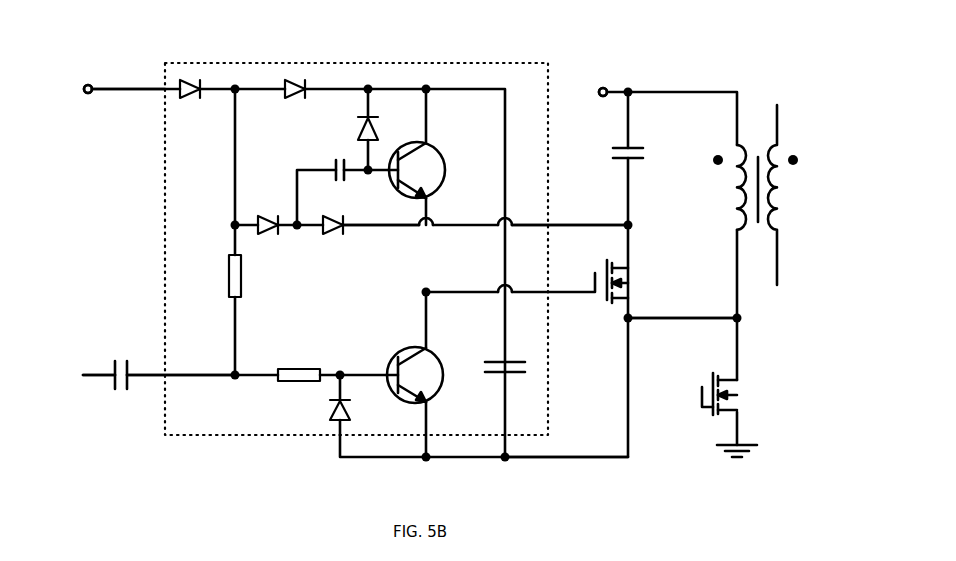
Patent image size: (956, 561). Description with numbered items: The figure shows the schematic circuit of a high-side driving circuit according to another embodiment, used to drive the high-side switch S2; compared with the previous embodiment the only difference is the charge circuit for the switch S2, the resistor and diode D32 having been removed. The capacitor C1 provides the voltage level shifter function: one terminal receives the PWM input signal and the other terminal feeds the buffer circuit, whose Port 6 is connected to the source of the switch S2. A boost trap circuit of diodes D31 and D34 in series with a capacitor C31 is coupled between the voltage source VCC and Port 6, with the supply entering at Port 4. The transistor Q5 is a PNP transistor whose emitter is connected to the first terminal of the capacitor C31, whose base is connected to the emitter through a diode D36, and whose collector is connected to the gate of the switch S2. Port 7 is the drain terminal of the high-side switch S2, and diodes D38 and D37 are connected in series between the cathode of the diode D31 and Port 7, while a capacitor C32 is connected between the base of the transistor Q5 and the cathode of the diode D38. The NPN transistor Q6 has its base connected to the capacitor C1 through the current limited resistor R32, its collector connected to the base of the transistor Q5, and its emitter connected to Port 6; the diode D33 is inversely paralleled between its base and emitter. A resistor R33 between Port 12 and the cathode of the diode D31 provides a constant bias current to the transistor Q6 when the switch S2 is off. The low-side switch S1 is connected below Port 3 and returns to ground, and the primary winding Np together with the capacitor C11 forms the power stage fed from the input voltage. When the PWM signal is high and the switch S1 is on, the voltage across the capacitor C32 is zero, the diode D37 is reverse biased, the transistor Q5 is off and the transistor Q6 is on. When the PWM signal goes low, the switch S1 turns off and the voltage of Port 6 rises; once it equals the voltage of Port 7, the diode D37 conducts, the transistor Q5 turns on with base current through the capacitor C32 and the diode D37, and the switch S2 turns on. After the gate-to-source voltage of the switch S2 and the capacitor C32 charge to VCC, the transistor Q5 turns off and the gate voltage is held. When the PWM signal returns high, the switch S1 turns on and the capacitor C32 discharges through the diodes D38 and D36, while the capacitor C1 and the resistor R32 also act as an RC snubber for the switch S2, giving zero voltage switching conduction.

The voltage source VCC is at (71, 80).
The port 4 Port 4 is at (121, 97).
The boost trap diode D31 is at (195, 107).
The boost trap diode D34 is at (291, 104).
The diode D36 is at (385, 127).
The capacitor C32 is at (326, 159).
The PNP transistor Q5 is at (432, 170).
The resistor R33 is at (214, 239).
The diode D38 is at (260, 241).
The diode D37 is at (337, 241).
The diode D32 is at (381, 212).
The NPN transistor Q6 is at (414, 362).
The current limited resistor R32 is at (299, 364).
The capacitor C31 is at (492, 355).
The diode D33 is at (320, 409).
The PWM input signal PWM is at (82, 364).
The capacitor C1 is at (110, 396).
The element Port 12 is at (193, 382).
The capacitor C11 is at (647, 155).
The element Port 7 is at (582, 223).
The high-side switch S2 is at (596, 281).
The port 3 Port 3 is at (573, 295).
The element Port 6 is at (577, 458).
The low-side switch S1 is at (698, 394).
The primary winding Np is at (738, 195).